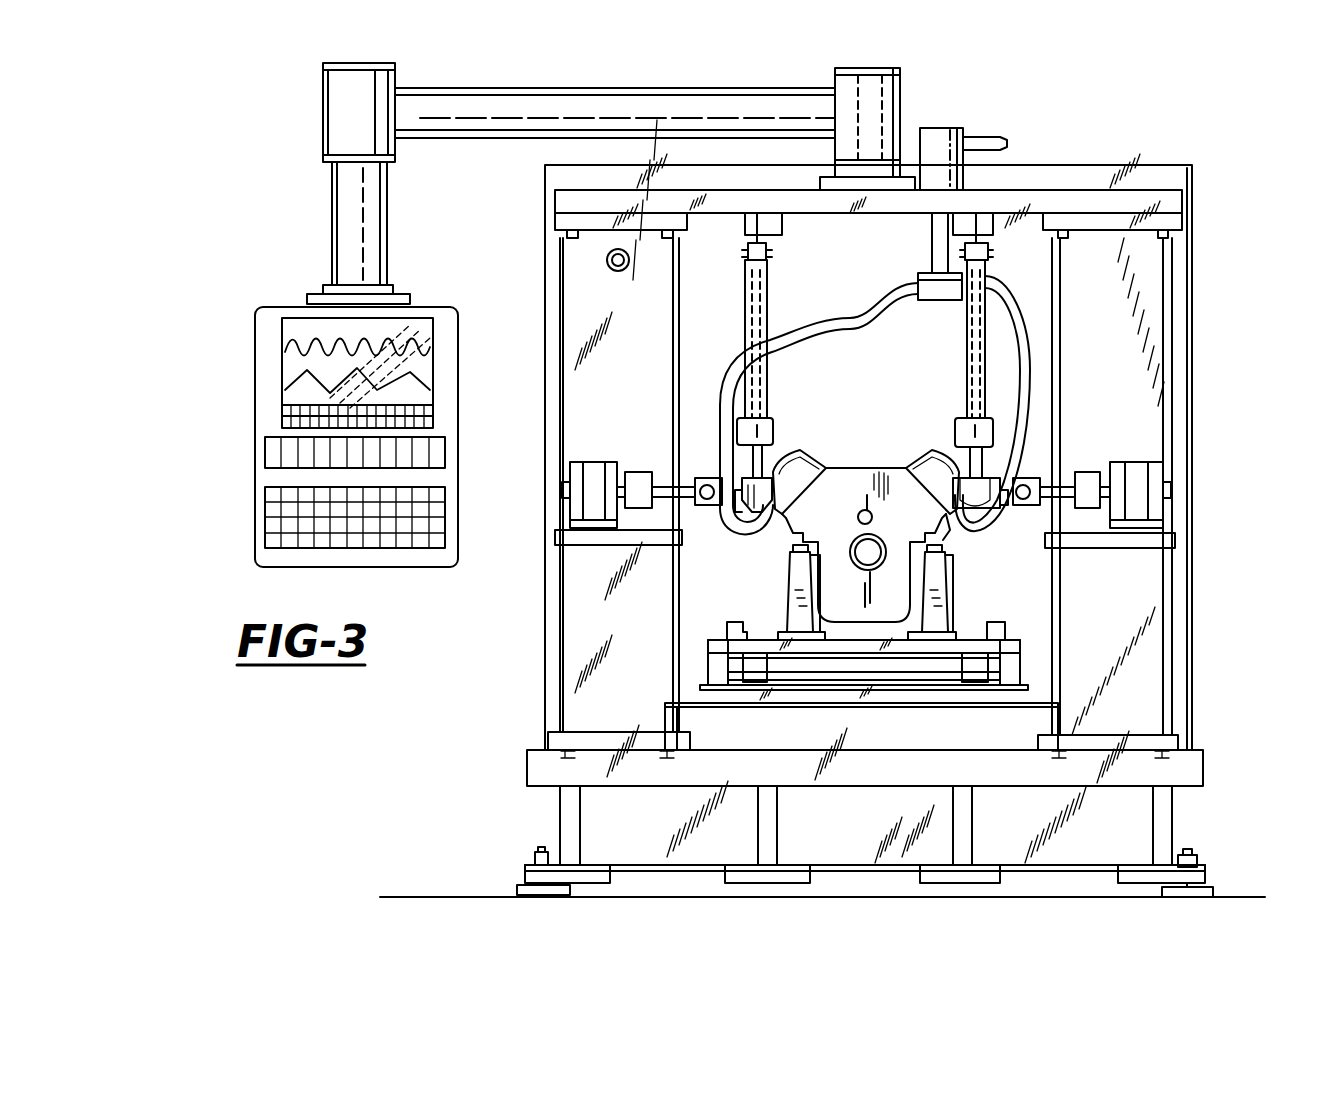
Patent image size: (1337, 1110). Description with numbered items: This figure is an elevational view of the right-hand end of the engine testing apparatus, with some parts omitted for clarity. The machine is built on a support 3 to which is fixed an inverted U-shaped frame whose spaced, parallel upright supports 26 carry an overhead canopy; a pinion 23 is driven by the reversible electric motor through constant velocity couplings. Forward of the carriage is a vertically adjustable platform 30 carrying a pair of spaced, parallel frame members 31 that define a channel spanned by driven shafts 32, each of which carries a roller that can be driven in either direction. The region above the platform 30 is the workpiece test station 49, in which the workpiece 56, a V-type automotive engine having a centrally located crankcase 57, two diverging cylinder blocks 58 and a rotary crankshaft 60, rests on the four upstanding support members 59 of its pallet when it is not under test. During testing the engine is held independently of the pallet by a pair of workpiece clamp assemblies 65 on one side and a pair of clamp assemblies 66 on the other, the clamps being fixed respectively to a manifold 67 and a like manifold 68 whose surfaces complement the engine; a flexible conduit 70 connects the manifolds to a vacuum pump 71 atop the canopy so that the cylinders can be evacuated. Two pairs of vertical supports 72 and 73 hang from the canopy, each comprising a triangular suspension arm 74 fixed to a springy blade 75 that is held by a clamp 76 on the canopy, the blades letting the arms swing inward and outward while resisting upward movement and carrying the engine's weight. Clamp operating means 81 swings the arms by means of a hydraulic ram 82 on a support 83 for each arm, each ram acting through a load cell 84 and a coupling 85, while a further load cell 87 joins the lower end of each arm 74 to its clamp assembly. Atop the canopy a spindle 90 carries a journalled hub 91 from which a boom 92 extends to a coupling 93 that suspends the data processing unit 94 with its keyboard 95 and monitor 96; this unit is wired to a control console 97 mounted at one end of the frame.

The support 3 is at (1203, 770).
The pinion 23 is at (975, 685).
The upright supports 26 is at (542, 500).
The vertically adjustable platform 30 is at (877, 700).
The frame members 31 is at (1020, 660).
The driven shafts 32 is at (935, 676).
The workpiece test station 49 is at (1027, 567).
The workpiece 56 is at (868, 463).
The crankcase 57 is at (855, 599).
The cylinder blocks 58 is at (950, 538).
The support members 59 is at (788, 610).
The crankshaft 60 is at (860, 540).
The workpiece clamp assemblies 65 is at (775, 419).
The clamp assemblies 66 is at (960, 403).
The manifold 67 is at (770, 523).
The manifold 68 is at (1000, 478).
The flexible conduit 70 is at (850, 312).
The vacuum pump 71 is at (950, 130).
The vertical supports 72 is at (744, 291).
The vertical supports 73 is at (998, 284).
The suspension arm 74 is at (767, 290).
The springy blade 75 is at (748, 222).
The clamp 76 is at (770, 222).
The clamp operating means 81 is at (690, 477).
The hydraulic ram 82 is at (582, 465).
The support 83 is at (561, 618).
The load cell 84 is at (640, 470).
The coupling 85 is at (675, 547).
The load cell 87 is at (740, 430).
The spindle 90 is at (857, 117).
The hub 91 is at (900, 102).
The boom 92 is at (560, 88).
The coupling 93 is at (345, 107).
The data processing unit 94 is at (288, 437).
The keyboard 95 is at (314, 516).
The monitor 96 is at (282, 352).
The control console 97 is at (1150, 165).